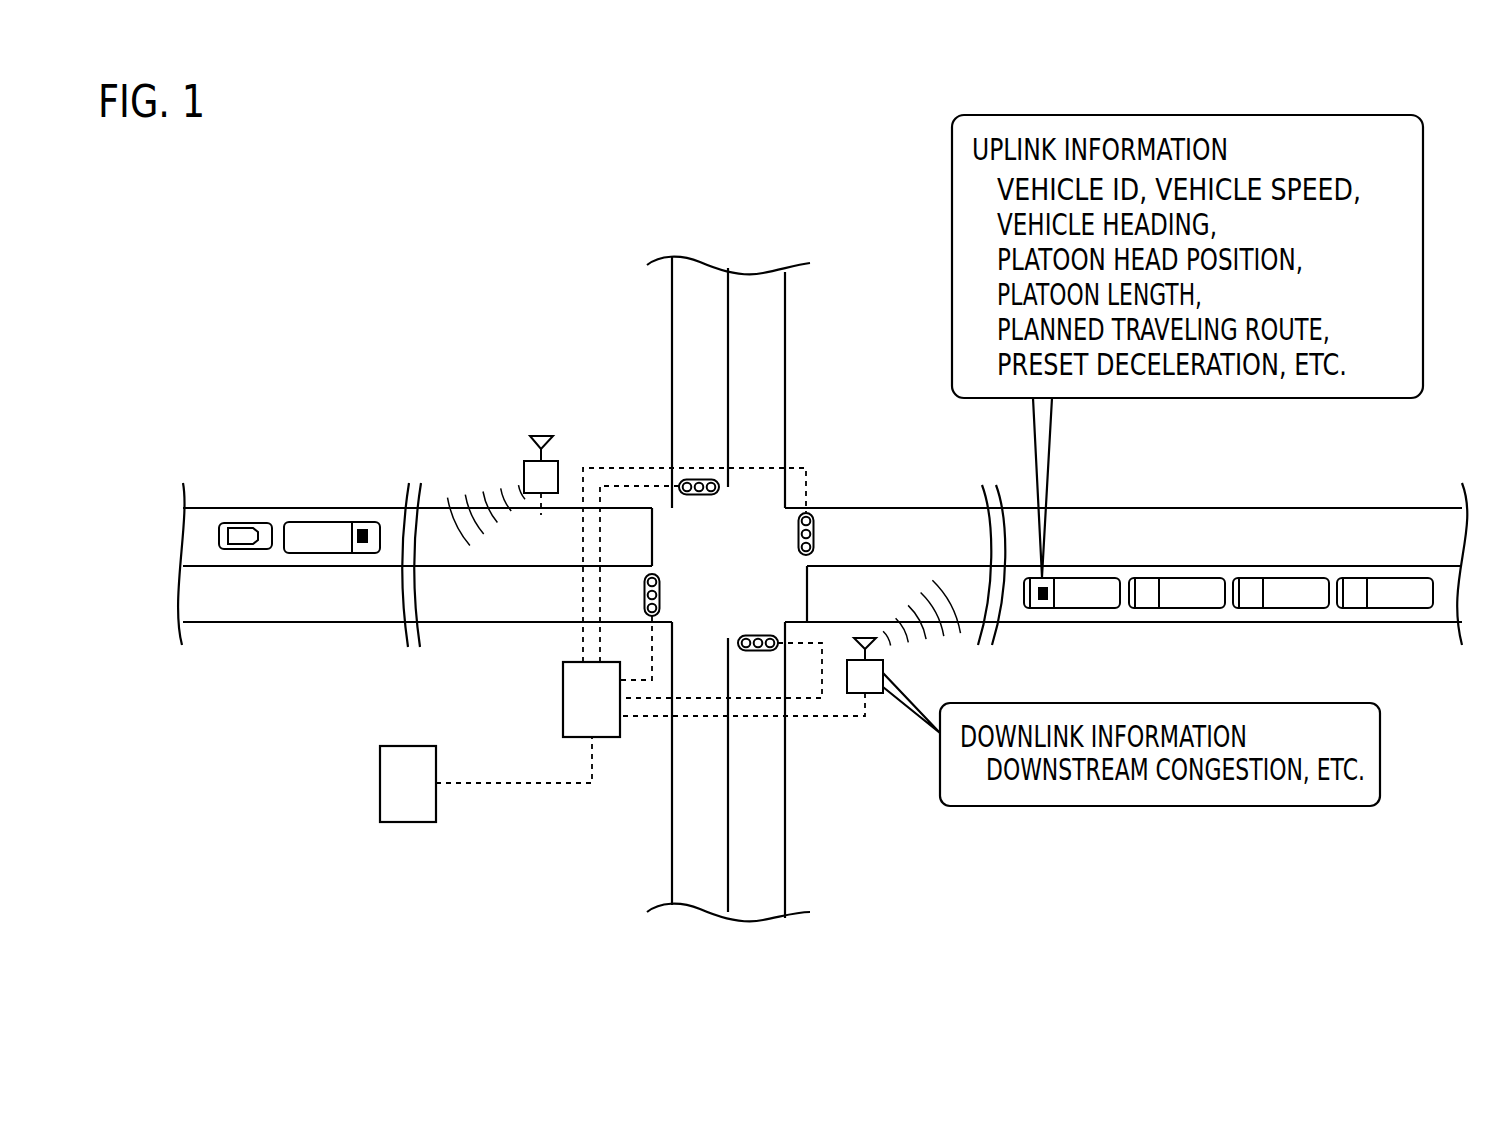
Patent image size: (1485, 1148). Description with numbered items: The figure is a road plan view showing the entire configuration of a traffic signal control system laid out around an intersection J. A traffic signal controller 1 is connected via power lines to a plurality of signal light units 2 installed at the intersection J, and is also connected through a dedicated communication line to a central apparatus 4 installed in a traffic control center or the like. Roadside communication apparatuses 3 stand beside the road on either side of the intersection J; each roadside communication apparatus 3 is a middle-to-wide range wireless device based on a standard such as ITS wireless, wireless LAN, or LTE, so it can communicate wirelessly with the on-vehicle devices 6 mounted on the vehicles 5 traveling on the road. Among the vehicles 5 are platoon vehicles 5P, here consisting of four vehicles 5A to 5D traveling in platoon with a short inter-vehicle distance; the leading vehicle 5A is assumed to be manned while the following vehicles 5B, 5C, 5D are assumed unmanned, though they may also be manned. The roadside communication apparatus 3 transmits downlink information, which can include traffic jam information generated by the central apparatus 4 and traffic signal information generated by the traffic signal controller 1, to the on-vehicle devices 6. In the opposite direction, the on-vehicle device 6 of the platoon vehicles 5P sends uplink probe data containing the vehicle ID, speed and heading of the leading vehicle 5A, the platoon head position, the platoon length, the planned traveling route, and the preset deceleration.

The traffic signal controller 1 is at (600, 714).
The signal light units 2 is at (694, 497).
The roadside communication apparatus 3 is at (524, 470).
The central apparatus 4 is at (400, 800).
The vehicles 5 is at (245, 522).
The leading vehicle 5A is at (1080, 608).
The following vehicle 5B is at (1183, 608).
The following vehicle 5C is at (1287, 608).
The following vehicle 5D is at (1390, 608).
The platoon vehicles 5P is at (1228, 561).
The on-vehicle device 6 is at (362, 530).
The intersection J is at (721, 578).